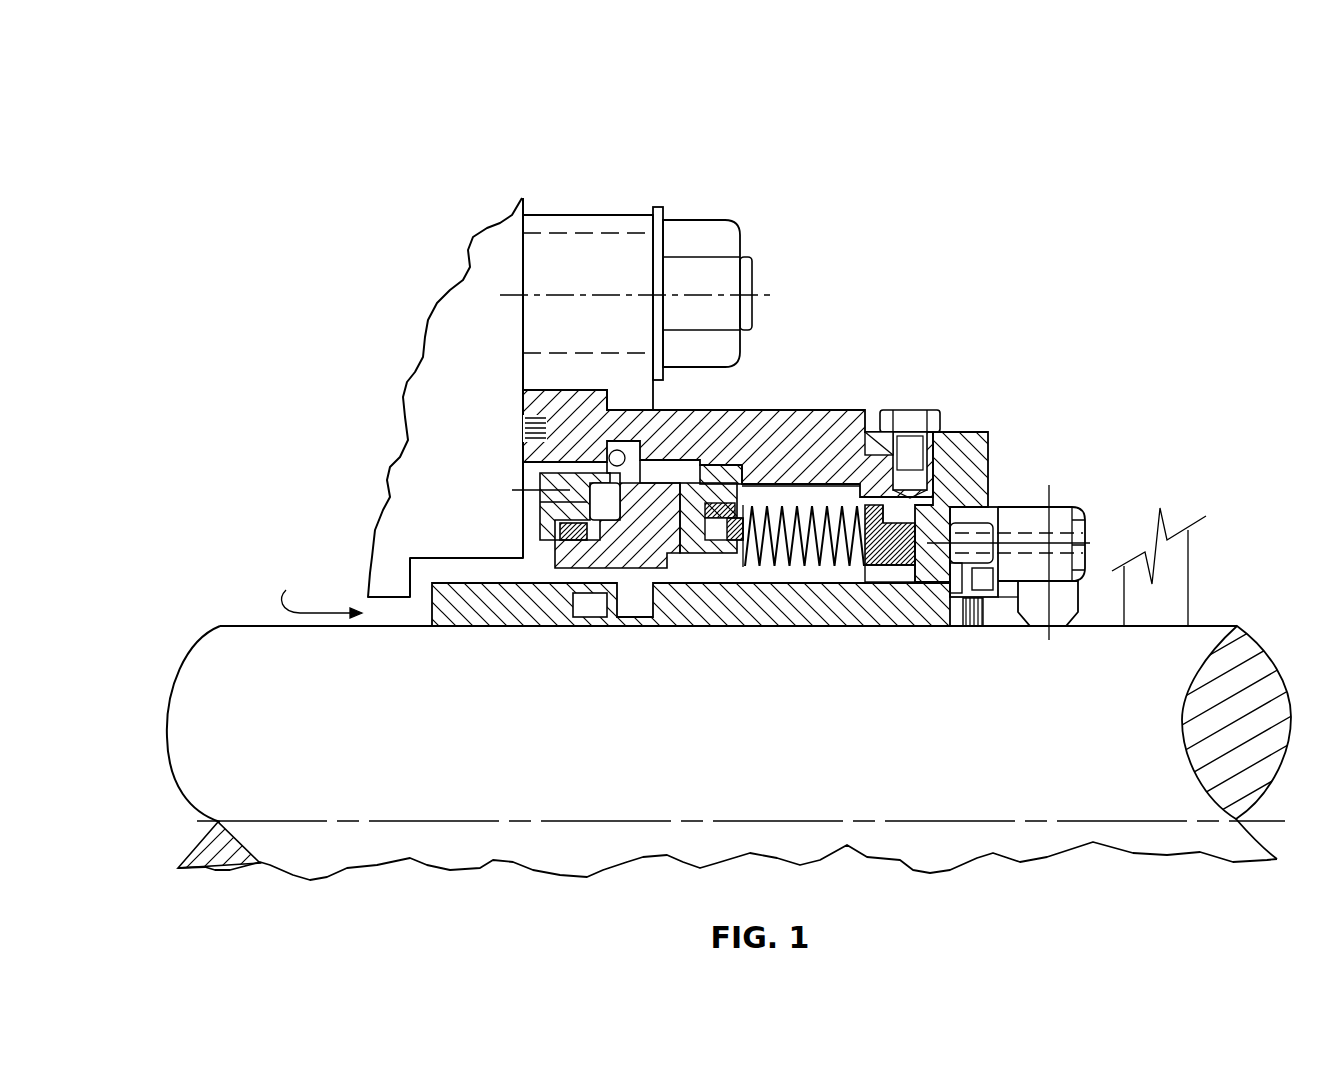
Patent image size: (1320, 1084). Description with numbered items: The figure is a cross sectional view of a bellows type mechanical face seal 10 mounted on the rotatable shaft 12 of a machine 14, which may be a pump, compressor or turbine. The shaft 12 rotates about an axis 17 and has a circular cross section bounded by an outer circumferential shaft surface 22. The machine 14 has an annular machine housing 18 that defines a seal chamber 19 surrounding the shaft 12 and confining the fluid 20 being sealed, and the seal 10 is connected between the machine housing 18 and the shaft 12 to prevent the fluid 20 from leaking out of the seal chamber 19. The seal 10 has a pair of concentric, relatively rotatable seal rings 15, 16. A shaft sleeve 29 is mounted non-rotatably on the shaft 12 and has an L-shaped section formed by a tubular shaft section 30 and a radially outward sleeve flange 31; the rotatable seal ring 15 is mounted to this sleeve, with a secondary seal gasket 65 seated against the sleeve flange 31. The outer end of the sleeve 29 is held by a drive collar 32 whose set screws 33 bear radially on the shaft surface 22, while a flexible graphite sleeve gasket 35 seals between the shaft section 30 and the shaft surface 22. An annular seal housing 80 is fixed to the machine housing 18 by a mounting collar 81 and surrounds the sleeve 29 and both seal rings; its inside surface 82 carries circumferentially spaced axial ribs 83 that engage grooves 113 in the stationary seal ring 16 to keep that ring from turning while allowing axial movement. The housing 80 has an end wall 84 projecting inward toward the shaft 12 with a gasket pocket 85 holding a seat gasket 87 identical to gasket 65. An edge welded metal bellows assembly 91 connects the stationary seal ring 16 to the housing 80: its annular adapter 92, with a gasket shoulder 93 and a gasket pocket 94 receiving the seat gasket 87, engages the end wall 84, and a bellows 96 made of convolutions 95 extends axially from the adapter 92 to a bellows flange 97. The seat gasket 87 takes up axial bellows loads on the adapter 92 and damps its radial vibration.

The bellows type mechanical face seal 10 is at (810, 445).
The rotatable shaft 12 is at (1142, 838).
The machine 14 is at (386, 236).
The rotatable seal ring 15 is at (590, 568).
The stationary seal ring 16 is at (724, 545).
The axis 17 is at (367, 810).
The machine housing 18 is at (513, 212).
The seal chamber 19 is at (322, 595).
The fluid 20 is at (836, 492).
The outer circumferential shaft surface 22 is at (239, 626).
The shaft sleeve 29 is at (691, 628).
The tubular shaft section 30 is at (838, 600).
The sleeve flange 31 is at (548, 528).
The drive collar 32 is at (1101, 503).
The set screws 33 is at (1090, 592).
The sleeve gasket 35 is at (1000, 622).
The secondary seal gasket 65 is at (552, 528).
The seal housing 80 is at (813, 430).
The mounting collar 81 is at (617, 230).
The inside surface 82 is at (786, 470).
The axial ribs 83 is at (735, 330).
The end wall 84 is at (937, 507).
The gasket pocket 85 is at (933, 600).
The seat gasket 87 is at (872, 568).
The edge welded metal bellows assembly 91 is at (866, 572).
The bellows adapter 92 is at (880, 582).
The gasket shoulder 93 is at (920, 578).
The gasket pocket 94 is at (905, 570).
The convolutions 95 is at (743, 570).
The bellows 96 is at (792, 575).
The bellows flange 97 is at (700, 480).
The grooves 113 is at (660, 468).